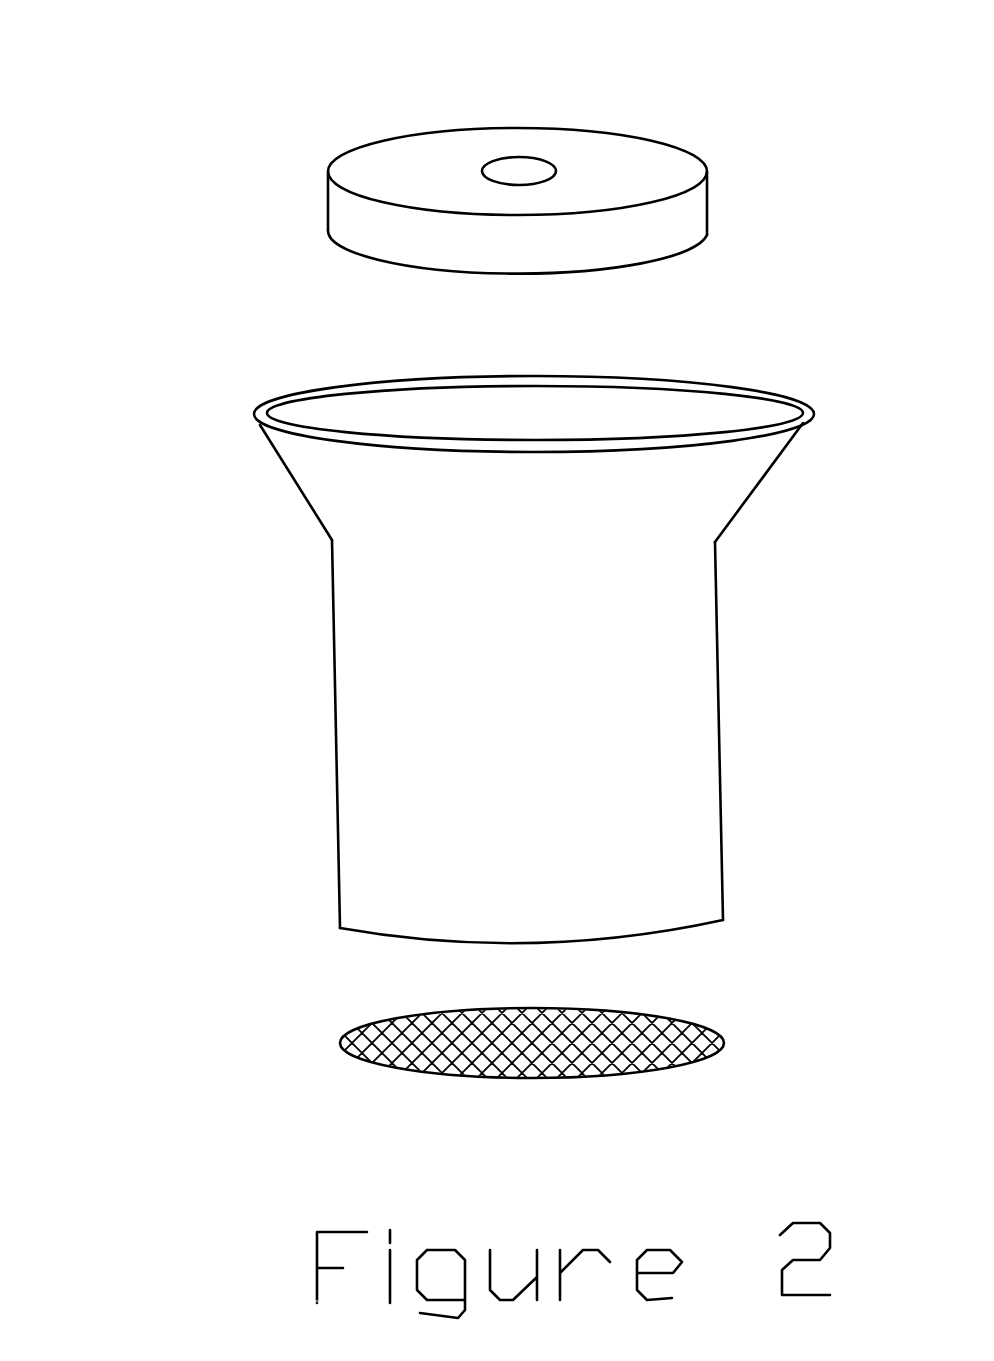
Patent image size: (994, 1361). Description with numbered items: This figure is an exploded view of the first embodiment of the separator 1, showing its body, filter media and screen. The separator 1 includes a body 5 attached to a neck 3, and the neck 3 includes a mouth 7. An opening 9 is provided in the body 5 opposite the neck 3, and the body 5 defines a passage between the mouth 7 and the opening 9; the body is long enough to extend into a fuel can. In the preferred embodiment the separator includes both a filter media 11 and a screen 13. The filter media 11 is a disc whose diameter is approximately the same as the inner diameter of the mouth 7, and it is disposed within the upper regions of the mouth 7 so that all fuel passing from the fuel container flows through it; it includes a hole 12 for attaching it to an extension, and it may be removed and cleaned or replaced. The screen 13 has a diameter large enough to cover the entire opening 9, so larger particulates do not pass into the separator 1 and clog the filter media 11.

The separator 1 is at (188, 358).
The neck 3 is at (331, 484).
The body 5 is at (703, 678).
The mouth 7 is at (417, 393).
The opening 9 is at (613, 970).
The filter media 11 is at (697, 210).
The hole 12 is at (525, 140).
The screen 13 is at (400, 1040).